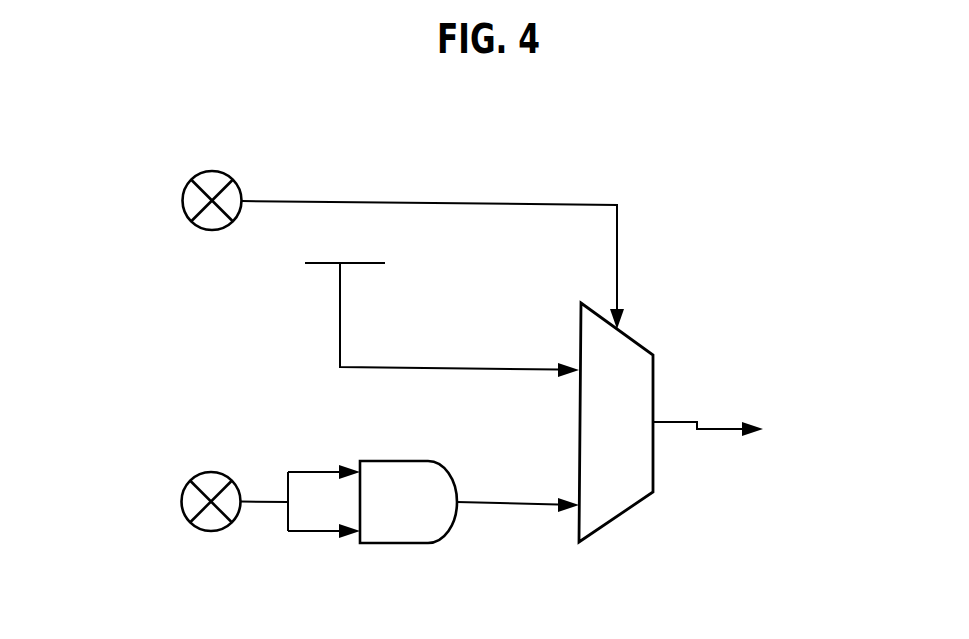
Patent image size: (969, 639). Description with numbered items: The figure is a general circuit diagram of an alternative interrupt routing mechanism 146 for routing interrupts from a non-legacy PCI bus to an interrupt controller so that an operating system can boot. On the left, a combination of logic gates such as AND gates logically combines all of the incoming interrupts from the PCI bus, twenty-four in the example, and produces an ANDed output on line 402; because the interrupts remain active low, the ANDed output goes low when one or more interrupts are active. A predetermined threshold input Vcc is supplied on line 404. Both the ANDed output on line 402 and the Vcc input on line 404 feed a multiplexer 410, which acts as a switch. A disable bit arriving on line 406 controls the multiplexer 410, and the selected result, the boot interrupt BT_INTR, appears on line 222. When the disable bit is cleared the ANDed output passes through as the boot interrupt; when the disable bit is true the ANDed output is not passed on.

The interrupt routing mechanism 146 is at (664, 188).
The disable bit input line 406 is at (352, 202).
The predetermined threshold input Vcc line 404 is at (392, 367).
The ANDed output line 402 is at (495, 503).
The multiplexer 410 is at (638, 338).
The boot interrupt output line 222 is at (703, 430).